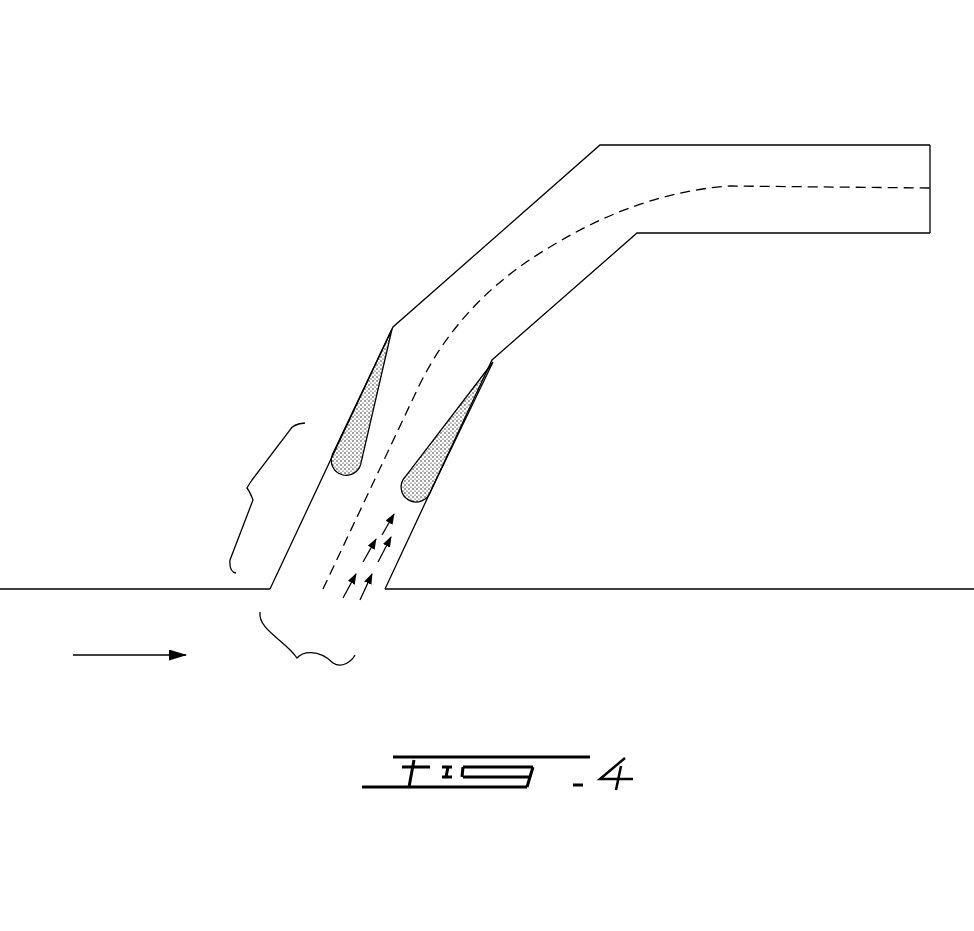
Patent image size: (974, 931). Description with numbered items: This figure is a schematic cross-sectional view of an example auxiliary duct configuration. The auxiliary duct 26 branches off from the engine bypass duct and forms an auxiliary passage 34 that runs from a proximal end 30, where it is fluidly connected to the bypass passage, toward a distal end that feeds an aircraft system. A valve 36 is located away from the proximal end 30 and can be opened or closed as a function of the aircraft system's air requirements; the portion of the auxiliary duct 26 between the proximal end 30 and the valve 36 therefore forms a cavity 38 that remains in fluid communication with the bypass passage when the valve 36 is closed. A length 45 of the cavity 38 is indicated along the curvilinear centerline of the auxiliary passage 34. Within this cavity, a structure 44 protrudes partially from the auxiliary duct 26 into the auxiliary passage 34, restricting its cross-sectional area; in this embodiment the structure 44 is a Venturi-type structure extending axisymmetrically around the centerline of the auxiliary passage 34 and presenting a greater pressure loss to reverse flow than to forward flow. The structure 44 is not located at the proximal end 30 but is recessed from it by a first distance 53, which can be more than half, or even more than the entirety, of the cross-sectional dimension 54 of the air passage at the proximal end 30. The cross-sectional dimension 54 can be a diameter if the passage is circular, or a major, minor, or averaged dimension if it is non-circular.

The auxiliary duct 26 is at (388, 192).
The proximal end 30 is at (270, 588).
The auxiliary passage 34 is at (576, 287).
The valve 36 is at (927, 185).
The cavity 38 is at (524, 327).
The structure 44 is at (357, 433).
The length 45 is at (549, 245).
The first distance 53 is at (259, 498).
The cross-sectional dimension 54 is at (307, 652).